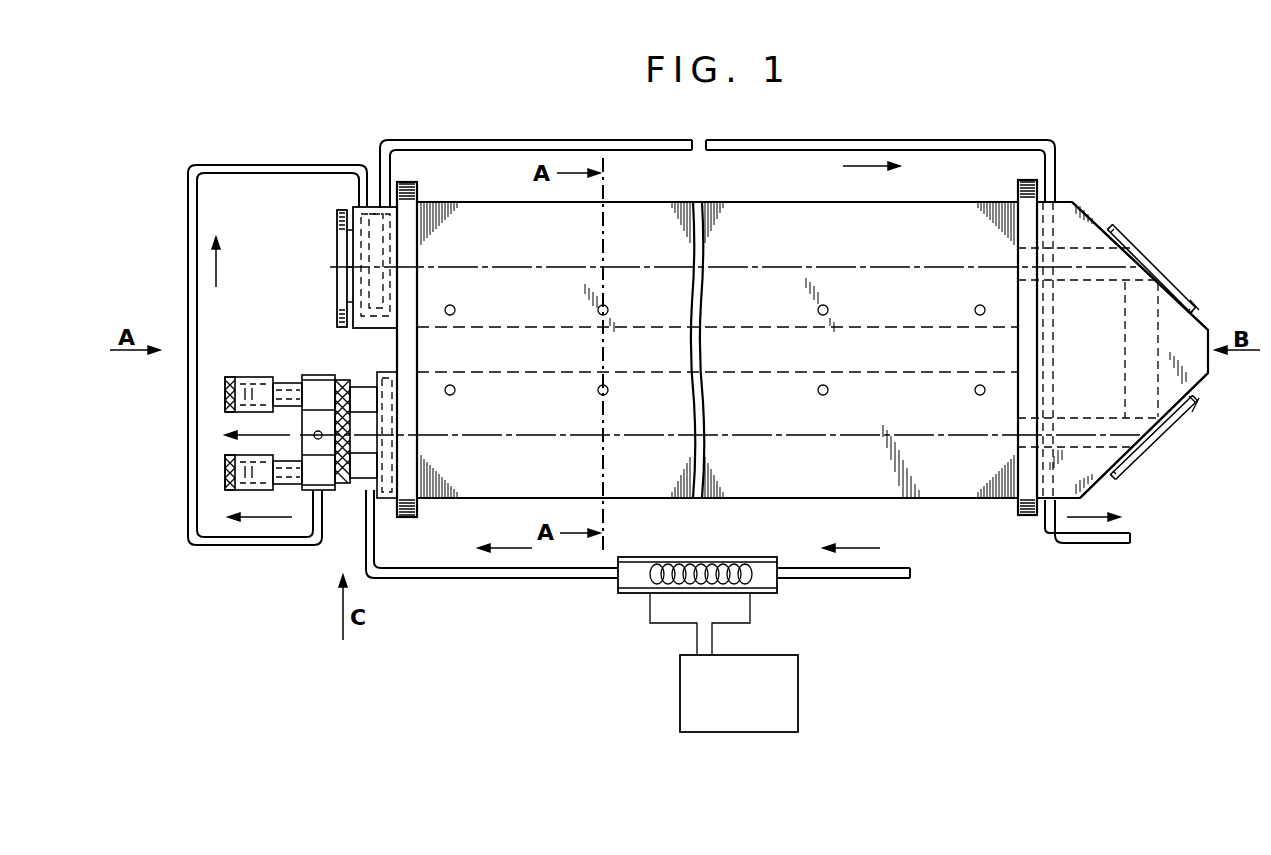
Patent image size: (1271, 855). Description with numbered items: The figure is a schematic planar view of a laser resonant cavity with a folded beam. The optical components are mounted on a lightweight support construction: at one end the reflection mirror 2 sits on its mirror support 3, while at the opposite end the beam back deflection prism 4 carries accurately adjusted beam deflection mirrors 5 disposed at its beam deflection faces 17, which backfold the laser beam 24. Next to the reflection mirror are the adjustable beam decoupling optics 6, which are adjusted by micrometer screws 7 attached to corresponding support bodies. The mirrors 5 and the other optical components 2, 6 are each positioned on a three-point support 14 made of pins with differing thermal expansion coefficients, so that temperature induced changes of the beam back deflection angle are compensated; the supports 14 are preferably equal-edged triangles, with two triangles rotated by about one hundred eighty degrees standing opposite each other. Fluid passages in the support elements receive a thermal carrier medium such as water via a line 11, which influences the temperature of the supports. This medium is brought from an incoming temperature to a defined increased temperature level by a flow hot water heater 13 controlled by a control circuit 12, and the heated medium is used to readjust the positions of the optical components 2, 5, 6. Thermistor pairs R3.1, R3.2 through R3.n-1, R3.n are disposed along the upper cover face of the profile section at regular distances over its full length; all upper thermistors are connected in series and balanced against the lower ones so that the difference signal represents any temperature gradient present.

The reflection mirror 2 is at (337, 230).
The mirror support 3 is at (375, 232).
The beam back deflection prism 4 is at (1185, 357).
The beam deflection mirrors 5 is at (1190, 300).
The beam decoupling optics 6 is at (350, 425).
The micrometer screws 7 is at (252, 388).
The line 11 is at (512, 140).
The control circuit 12 is at (748, 705).
The flow hot water heater 13 is at (637, 580).
The three-point support 14 is at (1155, 272).
The beam deflection faces 17 is at (1085, 212).
The laser beam 24 is at (283, 433).
The thermistor R3.1 is at (455, 315).
The thermistor R3.2 is at (608, 310).
The thermistor R3.n-1 is at (819, 313).
The thermistor R3.n is at (976, 314).